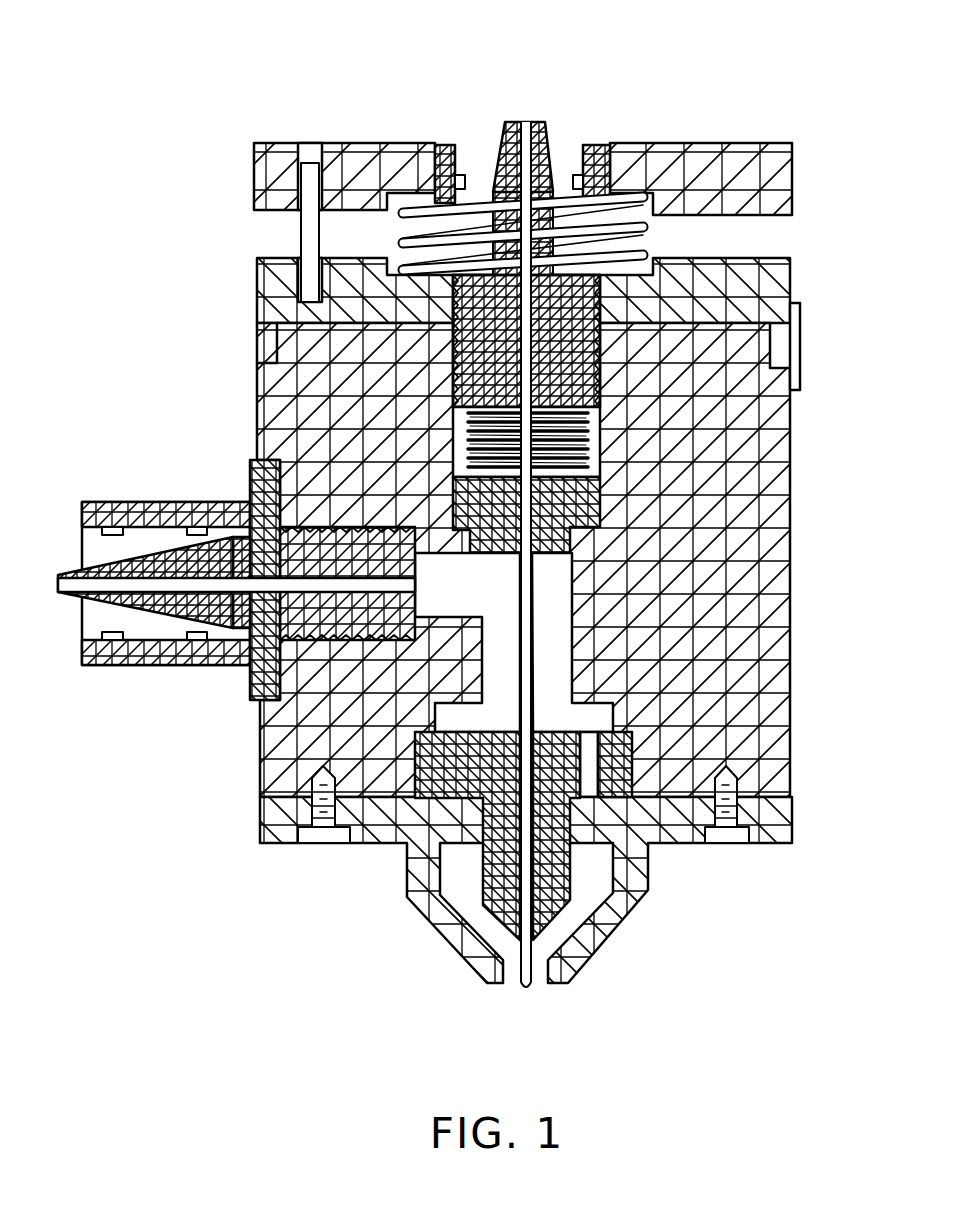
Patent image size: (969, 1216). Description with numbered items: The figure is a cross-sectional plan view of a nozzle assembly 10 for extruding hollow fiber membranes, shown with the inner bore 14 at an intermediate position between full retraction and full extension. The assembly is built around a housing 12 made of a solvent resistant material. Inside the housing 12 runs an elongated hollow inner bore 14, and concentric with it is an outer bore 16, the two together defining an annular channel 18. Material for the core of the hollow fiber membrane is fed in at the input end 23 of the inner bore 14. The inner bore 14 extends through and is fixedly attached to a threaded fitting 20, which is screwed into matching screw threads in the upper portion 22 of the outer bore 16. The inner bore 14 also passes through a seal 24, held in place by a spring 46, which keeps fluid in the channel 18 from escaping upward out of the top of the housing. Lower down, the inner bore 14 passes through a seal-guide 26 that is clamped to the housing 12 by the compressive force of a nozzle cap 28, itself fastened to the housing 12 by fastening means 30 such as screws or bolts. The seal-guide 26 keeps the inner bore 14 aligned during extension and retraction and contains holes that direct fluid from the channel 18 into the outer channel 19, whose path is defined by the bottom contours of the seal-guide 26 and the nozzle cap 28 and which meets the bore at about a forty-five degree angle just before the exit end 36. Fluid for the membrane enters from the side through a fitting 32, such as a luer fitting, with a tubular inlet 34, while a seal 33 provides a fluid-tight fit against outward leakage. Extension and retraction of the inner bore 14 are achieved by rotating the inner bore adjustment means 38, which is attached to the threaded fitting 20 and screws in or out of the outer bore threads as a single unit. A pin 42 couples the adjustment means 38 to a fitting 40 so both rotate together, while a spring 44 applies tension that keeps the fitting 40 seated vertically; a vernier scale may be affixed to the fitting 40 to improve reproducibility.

The nozzle assembly 10 is at (834, 288).
The housing 12 is at (795, 588).
The inner bore 14 is at (596, 384).
The outer bore 16 is at (560, 630).
The annular space or channel 18 is at (548, 712).
The channel 19 is at (608, 912).
The threaded fitting 20 is at (572, 185).
The upper portion of the outer bore 22 is at (470, 358).
The input end 23 is at (537, 122).
The seal 24 is at (465, 502).
The seal-guide 26 is at (590, 944).
The nozzle cap 28 is at (288, 845).
The fastening means 30 is at (735, 845).
The fitting 32 is at (103, 665).
The seal 33 is at (252, 680).
The tubular inlet 34 is at (58, 580).
The exit end 36 is at (516, 988).
The inner bore adjustment means 38 is at (748, 162).
The fitting 40 is at (803, 352).
The pin 42 is at (257, 222).
The spring 44 is at (484, 192).
The spring 46 is at (592, 446).